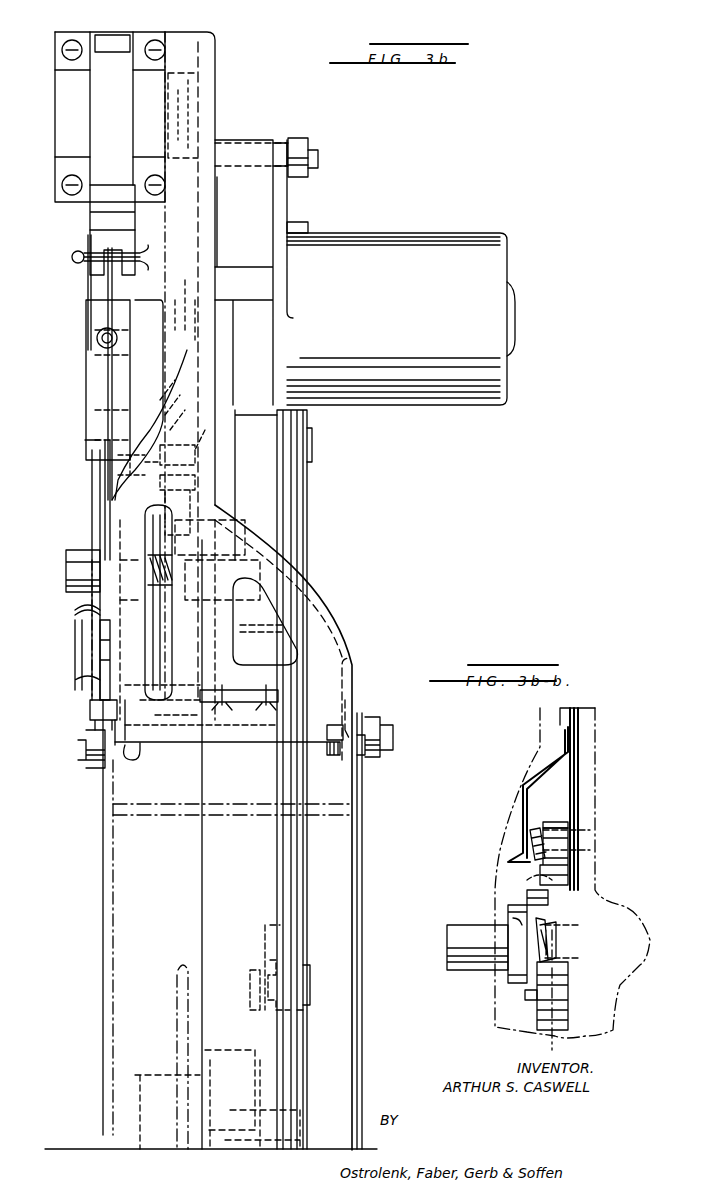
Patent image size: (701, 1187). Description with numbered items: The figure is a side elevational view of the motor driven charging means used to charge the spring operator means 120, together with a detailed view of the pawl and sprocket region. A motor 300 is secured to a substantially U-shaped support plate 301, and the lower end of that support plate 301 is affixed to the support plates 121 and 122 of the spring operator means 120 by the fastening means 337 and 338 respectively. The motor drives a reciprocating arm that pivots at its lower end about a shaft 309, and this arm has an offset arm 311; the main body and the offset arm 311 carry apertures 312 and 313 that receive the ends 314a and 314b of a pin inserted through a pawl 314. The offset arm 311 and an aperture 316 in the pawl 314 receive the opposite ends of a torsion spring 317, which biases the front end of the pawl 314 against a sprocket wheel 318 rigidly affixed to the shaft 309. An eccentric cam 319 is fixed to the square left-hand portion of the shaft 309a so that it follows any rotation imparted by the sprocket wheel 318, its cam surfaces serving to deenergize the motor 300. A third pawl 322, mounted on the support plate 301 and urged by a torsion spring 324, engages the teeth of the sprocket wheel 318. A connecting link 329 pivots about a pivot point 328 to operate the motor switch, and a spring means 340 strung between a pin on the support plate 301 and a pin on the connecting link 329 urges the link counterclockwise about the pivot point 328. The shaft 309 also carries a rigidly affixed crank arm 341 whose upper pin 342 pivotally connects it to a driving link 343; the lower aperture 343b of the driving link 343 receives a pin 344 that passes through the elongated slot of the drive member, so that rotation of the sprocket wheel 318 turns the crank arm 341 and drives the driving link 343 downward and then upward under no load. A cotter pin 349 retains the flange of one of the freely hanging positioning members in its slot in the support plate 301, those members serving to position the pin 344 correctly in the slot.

In FIG. 3b, the spring operator means 120 is at (86, 992).
In FIG. 3b, the support plate 121 is at (103, 935).
In FIG. 3b, the support plate 122 is at (362, 790).
In FIG. 3b, the motor 300 is at (410, 242).
In FIG. 3b, the support plate 301 is at (190, 45).
In FIG. 3b, the shaft 309 is at (255, 530).
In FIG. 3b, the shaft 309a is at (76, 574).
In FIG. 3b-b, the shaft 309a is at (447, 965).
In FIG. 3b, the offset arm 311 is at (124, 400).
In FIG. 3b-b, the offset arm 311 is at (560, 752).
In FIG. 3b, the aperture 312 is at (92, 462).
In FIG. 3b, the aperture 313 is at (225, 430).
In FIG. 3b-b, the pawl 314 is at (560, 842).
In FIG. 3b, the pin end 314a is at (105, 487).
In FIG. 3b, the pin end 314b is at (200, 476).
In FIG. 3b-b, the aperture 316 is at (560, 820).
In FIG. 3b, the torsion spring 317 is at (151, 425).
In FIG. 3b-b, the torsion spring 317 is at (533, 830).
In FIG. 3b-b, the sprocket wheel 318 is at (540, 1035).
In FIG. 3b, the eccentric cam 319 is at (102, 664).
In FIG. 3b-b, the third pawl 322 is at (558, 948).
In FIG. 3b-b, the torsion spring 324 is at (510, 912).
In FIG. 3b, the pivot point 328 is at (70, 258).
In FIG. 3b, the connecting link 329 is at (106, 288).
In FIG. 3b, the fastening means 337 is at (80, 746).
In FIG. 3b, the fastening means 338 is at (378, 732).
In FIG. 3b, the spring means 340 is at (75, 642).
In FIG. 3b, the crank arm 341 is at (262, 472).
In FIG. 3b, the pin 342 is at (312, 448).
In FIG. 3b, the driving link 343 is at (305, 520).
In FIG. 3b, the aperture 343b is at (298, 1022).
In FIG. 3b, the pin 344 is at (310, 990).
In FIG. 3b, the cotter pin 349 is at (266, 700).